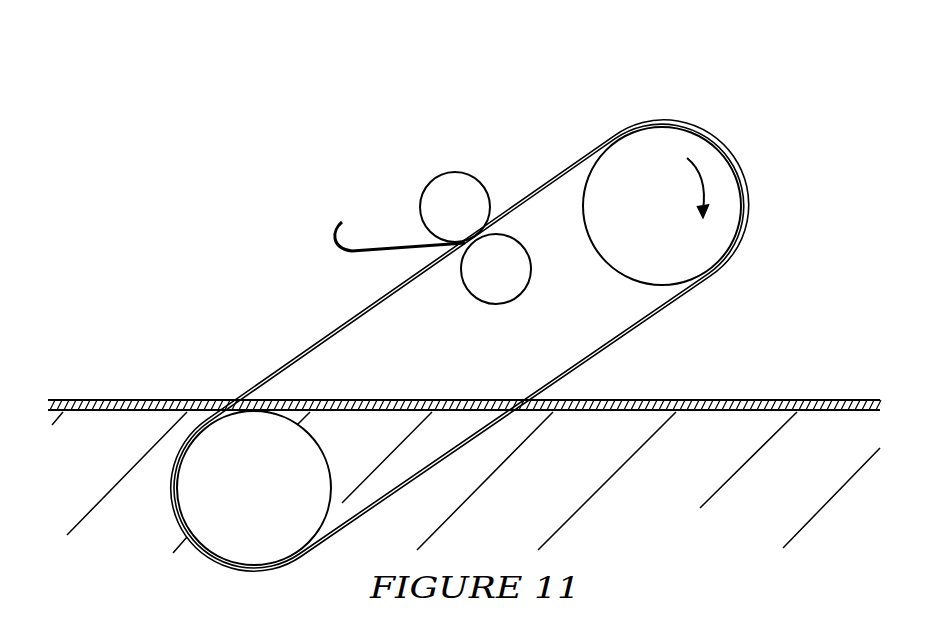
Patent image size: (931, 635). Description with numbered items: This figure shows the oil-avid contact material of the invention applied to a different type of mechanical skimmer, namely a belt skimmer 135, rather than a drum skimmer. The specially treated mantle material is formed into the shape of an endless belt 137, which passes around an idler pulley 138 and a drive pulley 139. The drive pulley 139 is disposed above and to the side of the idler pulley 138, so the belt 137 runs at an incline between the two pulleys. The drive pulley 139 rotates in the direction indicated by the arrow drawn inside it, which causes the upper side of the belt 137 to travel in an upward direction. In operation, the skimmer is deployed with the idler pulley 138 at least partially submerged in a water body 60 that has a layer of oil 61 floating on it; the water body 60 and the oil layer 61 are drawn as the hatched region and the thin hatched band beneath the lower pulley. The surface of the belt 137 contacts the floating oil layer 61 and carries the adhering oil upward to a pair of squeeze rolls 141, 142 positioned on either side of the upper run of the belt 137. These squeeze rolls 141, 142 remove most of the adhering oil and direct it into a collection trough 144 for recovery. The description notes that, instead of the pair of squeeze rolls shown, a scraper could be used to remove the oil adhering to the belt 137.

The water body 60 is at (530, 533).
The layer of oil 61 is at (822, 400).
The belt skimmer 135 is at (457, 84).
The endless belt 137 is at (317, 341).
The idler pulley 138 is at (288, 545).
The drive pulley 139 is at (695, 262).
The squeeze roll 141 is at (462, 183).
The squeeze roll 142 is at (518, 267).
The collection trough 144 is at (393, 248).